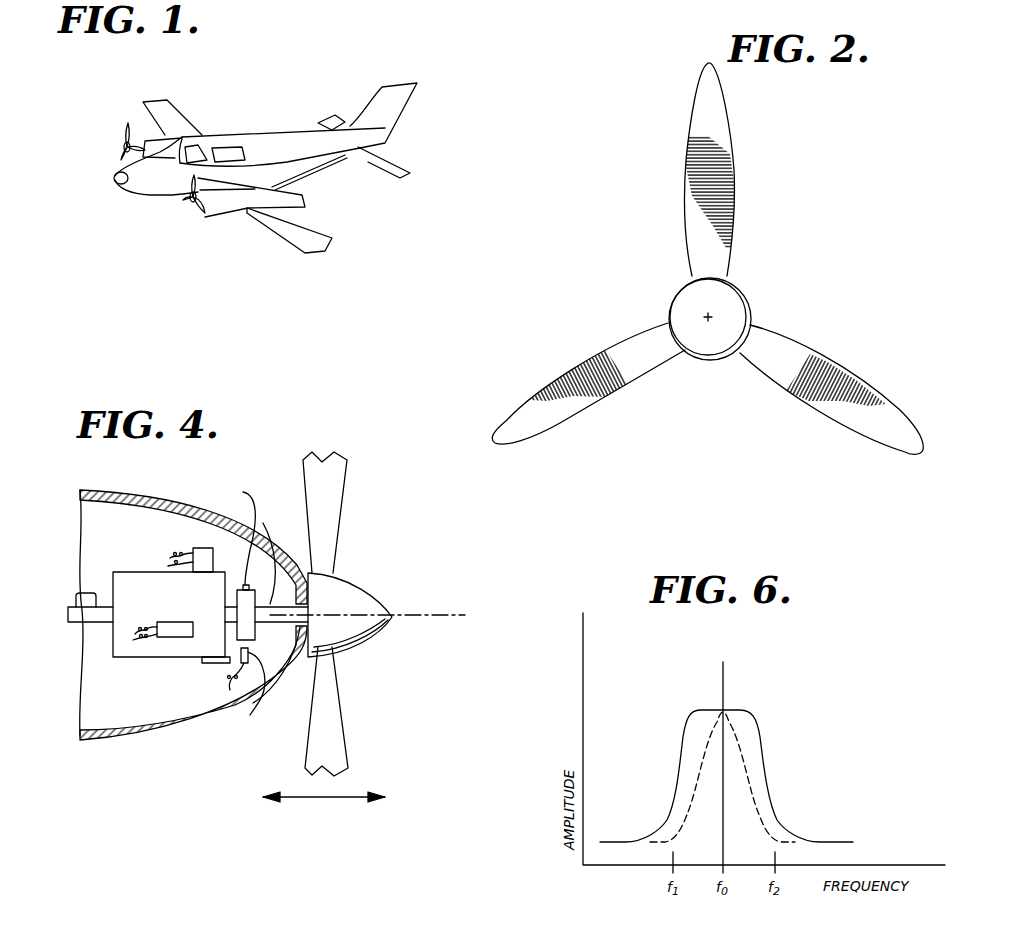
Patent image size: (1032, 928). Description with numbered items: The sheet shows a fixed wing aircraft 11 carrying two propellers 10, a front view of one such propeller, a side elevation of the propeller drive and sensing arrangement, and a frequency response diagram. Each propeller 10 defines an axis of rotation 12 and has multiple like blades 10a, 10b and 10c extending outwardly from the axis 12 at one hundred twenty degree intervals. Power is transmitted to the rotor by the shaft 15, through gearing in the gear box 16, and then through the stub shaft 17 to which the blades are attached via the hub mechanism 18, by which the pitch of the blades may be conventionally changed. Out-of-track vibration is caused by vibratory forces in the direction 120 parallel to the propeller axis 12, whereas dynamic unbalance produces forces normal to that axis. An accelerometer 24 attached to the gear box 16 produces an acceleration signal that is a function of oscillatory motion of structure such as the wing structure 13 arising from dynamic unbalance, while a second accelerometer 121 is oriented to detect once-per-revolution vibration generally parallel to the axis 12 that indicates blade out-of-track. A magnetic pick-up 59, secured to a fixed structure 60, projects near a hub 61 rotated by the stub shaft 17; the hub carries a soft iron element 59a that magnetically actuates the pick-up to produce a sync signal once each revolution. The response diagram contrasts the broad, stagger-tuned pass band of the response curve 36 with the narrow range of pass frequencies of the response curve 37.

In FIG. 1, the propeller 10 is at (120, 150).
In FIG. 4, the propeller 10 is at (385, 533).
In FIG. 1, the fixed wing aircraft 11 is at (273, 100).
In FIG. 1, the wing structure 13 is at (148, 110).
In FIG. 2, the blade 10a is at (818, 350).
In FIG. 2, the blade 10b is at (580, 410).
In FIG. 2, the blade 10c is at (686, 200).
In FIG. 2, the axis of rotation 12 is at (708, 317).
In FIG. 4, the axis of rotation 12 is at (427, 618).
In FIG. 4, the shaft 15 is at (76, 596).
In FIG. 4, the gear box 16 is at (107, 645).
In FIG. 4, the stub shaft 17 is at (272, 548).
In FIG. 4, the hub mechanism 18 is at (345, 600).
In FIG. 4, the accelerometer 24 is at (196, 547).
In FIG. 4, the magnetic pick-up 59 is at (250, 715).
In FIG. 4, the soft iron element 59a is at (236, 534).
In FIG. 4, the fixed structure 60 is at (202, 660).
In FIG. 4, the hub 61 is at (237, 610).
In FIG. 4, the direction parallel to the propeller axis 120 is at (320, 797).
In FIG. 4, the accelerometer 121 is at (168, 622).
In FIG. 6, the response curve 36 is at (683, 740).
In FIG. 6, the response curve 37 is at (737, 773).